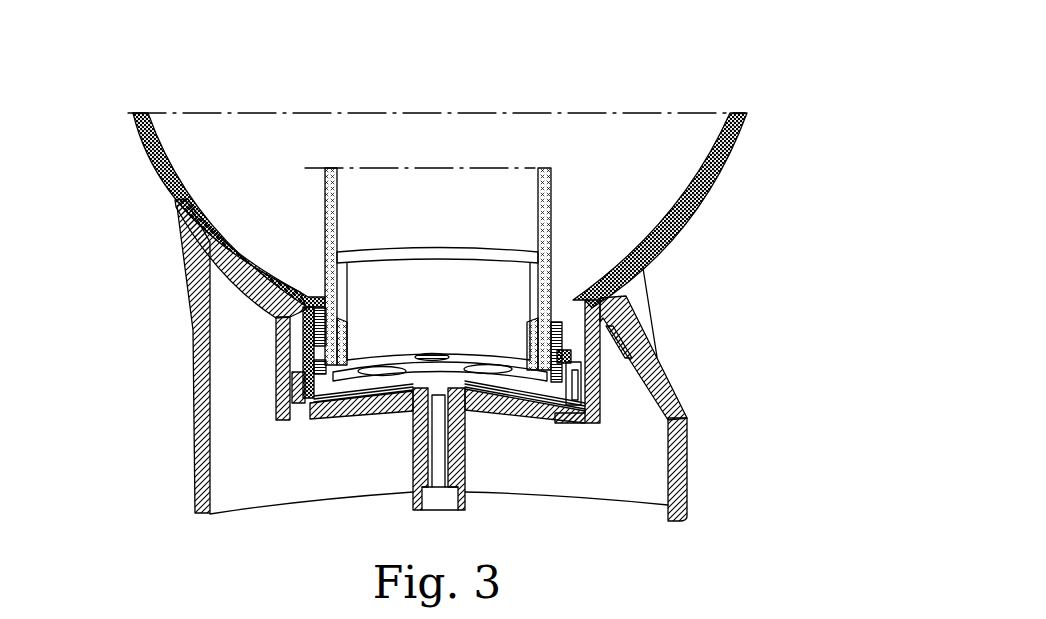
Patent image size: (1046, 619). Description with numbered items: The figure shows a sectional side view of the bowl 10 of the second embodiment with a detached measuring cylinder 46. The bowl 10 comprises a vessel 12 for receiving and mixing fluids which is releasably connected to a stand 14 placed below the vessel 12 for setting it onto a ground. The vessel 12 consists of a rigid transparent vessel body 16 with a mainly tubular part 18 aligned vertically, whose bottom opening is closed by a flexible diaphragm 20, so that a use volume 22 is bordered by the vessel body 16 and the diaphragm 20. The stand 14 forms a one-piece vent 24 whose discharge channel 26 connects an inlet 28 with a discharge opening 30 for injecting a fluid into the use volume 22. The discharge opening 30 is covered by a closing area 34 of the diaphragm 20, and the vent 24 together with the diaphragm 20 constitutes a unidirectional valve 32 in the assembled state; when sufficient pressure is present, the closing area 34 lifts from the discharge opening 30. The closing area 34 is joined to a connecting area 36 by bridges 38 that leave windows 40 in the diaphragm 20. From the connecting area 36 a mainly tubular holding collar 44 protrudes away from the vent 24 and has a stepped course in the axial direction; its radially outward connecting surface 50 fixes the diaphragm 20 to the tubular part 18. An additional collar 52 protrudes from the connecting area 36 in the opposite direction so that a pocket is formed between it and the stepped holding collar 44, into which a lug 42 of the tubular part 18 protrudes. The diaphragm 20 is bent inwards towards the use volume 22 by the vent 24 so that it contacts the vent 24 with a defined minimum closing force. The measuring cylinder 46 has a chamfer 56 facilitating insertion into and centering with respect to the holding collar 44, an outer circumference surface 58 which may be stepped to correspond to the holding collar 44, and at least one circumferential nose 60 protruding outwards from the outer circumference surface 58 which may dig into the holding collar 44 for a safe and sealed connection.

The bowl 10 is at (159, 94).
The vessel 12 is at (694, 140).
The stand 14 is at (683, 492).
The vessel body 16 is at (745, 137).
The tubular part 18 is at (628, 318).
The diaphragm 20 is at (320, 420).
The use volume 22 is at (224, 173).
The vent 24 is at (467, 455).
The discharge channel 26 is at (430, 452).
The inlet 28 is at (433, 507).
The discharge opening 30 is at (410, 428).
The unidirectional valve 32 is at (465, 410).
The closing area 34 is at (458, 365).
The connecting area 36 is at (317, 270).
The bridges 38 is at (397, 365).
The windows 40 is at (352, 268).
The lug 42 is at (602, 381).
The holding collar 44 is at (603, 354).
The measuring cylinder 46 is at (554, 211).
The connecting surface 50 is at (635, 353).
The additional collar 52 is at (580, 426).
The chamfer 56 is at (285, 392).
The outer circumference surface 58 is at (555, 186).
The nose 60 is at (320, 283).